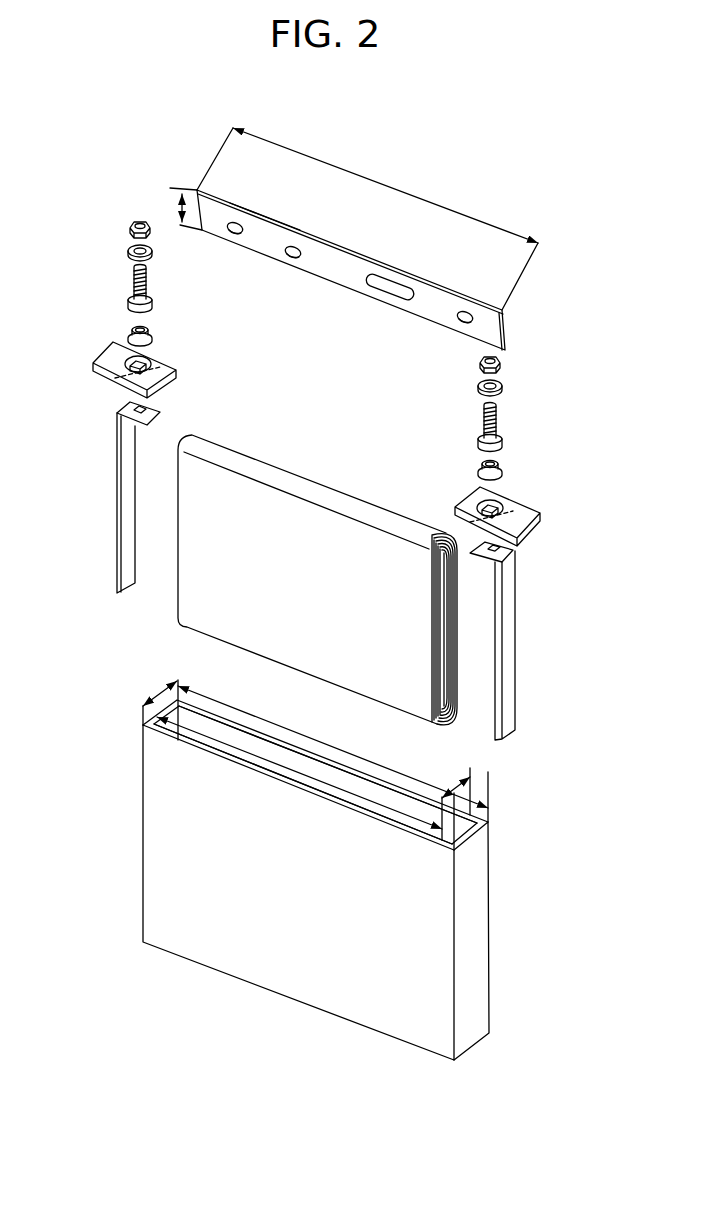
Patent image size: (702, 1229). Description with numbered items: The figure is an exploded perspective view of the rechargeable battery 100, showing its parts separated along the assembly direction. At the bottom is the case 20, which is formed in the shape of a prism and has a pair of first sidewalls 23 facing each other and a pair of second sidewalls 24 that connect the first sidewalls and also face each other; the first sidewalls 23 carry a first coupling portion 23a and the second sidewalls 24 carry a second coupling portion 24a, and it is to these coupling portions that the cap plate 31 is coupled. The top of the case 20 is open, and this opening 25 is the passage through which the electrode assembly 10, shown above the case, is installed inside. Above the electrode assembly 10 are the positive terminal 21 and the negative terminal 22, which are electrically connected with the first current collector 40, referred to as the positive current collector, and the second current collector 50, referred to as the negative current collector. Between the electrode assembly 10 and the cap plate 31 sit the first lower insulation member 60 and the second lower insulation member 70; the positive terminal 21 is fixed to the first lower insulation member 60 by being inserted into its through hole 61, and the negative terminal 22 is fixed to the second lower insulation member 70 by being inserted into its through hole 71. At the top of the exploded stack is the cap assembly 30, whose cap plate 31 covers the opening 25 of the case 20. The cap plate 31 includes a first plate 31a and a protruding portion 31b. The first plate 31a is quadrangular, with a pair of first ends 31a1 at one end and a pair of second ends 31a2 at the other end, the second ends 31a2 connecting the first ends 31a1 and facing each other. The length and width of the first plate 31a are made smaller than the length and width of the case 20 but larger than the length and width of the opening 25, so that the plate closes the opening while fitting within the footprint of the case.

The rechargeable battery 100 is at (116, 135).
The electrode assembly 10 is at (354, 488).
The case 20 is at (502, 903).
The positive terminal 21 is at (135, 268).
The negative terminal 22 is at (497, 398).
The first sidewall 23 is at (143, 732).
The first coupling portion 23a is at (155, 719).
The second sidewall 24 is at (157, 802).
The second coupling portion 24a is at (222, 758).
The opening 25 is at (268, 762).
The cap assembly 30 is at (417, 270).
The cap plate 31 is at (281, 223).
The first plate 31a is at (198, 189).
The first end 31a1 is at (237, 204).
The second end 31a2 is at (507, 323).
The protruding portion 31b is at (222, 227).
The first current collector 40 is at (115, 561).
The second current collector 50 is at (527, 703).
The first lower insulation member 60 is at (120, 385).
The through hole 61 is at (147, 363).
The second lower insulation member 70 is at (546, 516).
The through hole 71 is at (498, 503).